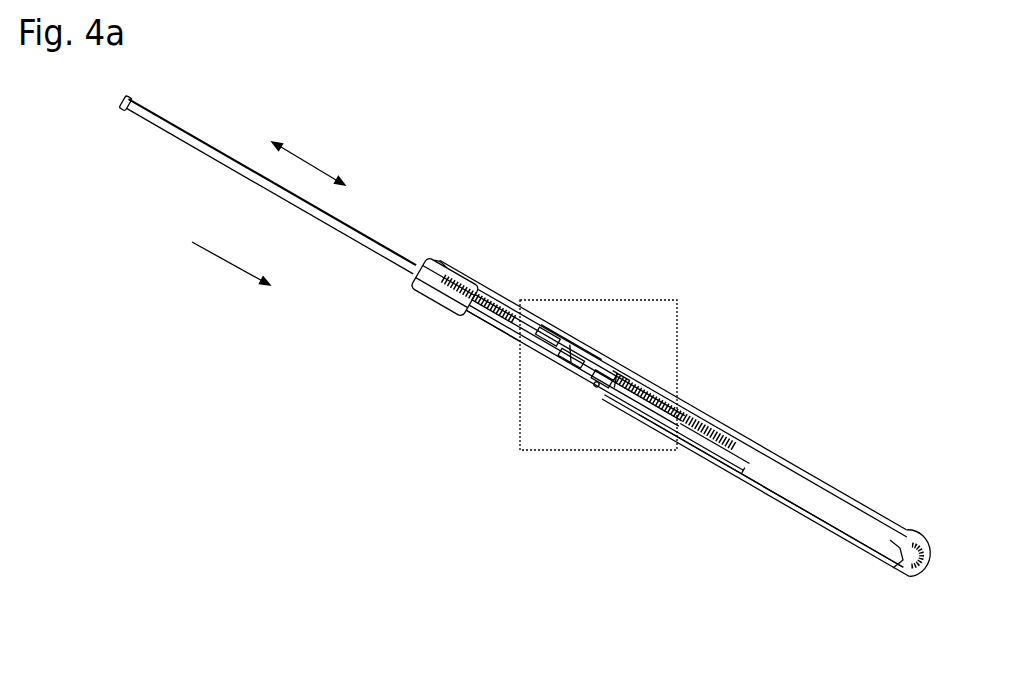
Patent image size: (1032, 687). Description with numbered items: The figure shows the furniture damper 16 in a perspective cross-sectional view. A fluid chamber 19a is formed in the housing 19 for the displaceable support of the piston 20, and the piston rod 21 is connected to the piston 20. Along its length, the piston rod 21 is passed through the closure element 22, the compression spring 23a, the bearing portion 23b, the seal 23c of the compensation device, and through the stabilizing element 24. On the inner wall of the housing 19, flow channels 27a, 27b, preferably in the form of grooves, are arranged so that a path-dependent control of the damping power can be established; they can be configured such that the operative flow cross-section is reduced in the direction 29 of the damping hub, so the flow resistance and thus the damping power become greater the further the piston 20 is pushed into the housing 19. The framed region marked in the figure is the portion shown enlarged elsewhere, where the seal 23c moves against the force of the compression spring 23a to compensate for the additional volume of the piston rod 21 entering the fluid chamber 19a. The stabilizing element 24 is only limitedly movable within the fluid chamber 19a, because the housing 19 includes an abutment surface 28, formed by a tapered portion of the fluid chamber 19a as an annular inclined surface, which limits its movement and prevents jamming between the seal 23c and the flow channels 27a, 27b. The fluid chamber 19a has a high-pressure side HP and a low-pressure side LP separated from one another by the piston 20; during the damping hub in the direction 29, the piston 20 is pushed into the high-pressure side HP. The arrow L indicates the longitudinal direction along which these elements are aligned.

The furniture damper 16 is at (433, 328).
The housing 19 is at (830, 487).
The fluid chamber 19a is at (793, 490).
The piston 20 is at (623, 413).
The piston rod 21 is at (207, 157).
The closure element 22 is at (433, 297).
The compression spring 23a is at (477, 330).
The bearing portion 23b is at (500, 312).
The seal 23c is at (543, 312).
The stabilizing element 24 is at (567, 363).
The flow channel 27a is at (713, 463).
The flow channel 27b is at (693, 402).
The abutment surface 28 is at (568, 372).
The direction of the damping hub 29 is at (231, 276).
The longitudinal direction L is at (308, 152).
The low-pressure side LP is at (552, 343).
The high-pressure side HP is at (860, 535).